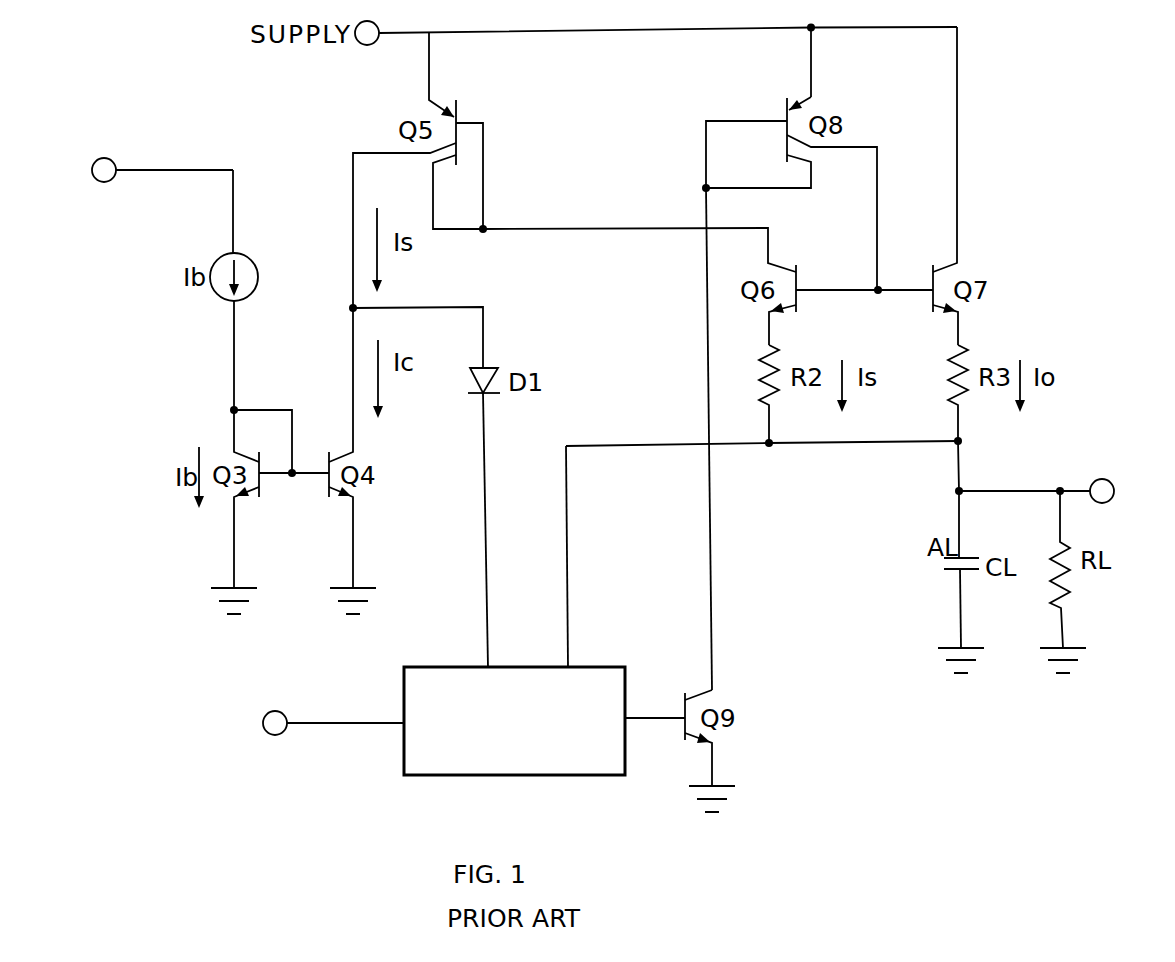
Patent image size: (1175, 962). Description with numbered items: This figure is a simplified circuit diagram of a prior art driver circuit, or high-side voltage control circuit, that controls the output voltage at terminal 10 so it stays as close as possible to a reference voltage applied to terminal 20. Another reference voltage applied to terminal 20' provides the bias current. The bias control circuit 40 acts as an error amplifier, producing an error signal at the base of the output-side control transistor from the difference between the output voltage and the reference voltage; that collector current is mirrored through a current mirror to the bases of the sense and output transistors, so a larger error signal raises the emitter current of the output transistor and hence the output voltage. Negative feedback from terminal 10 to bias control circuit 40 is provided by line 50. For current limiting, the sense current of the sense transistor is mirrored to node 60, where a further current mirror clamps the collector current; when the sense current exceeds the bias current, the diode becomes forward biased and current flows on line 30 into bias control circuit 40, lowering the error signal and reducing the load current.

The terminal 10 is at (1100, 479).
The terminal 20 is at (307, 750).
The terminal 20' is at (134, 148).
The line 30 is at (486, 537).
The bias control circuit 40 is at (525, 776).
The line 50 is at (568, 598).
The node 60 is at (351, 307).